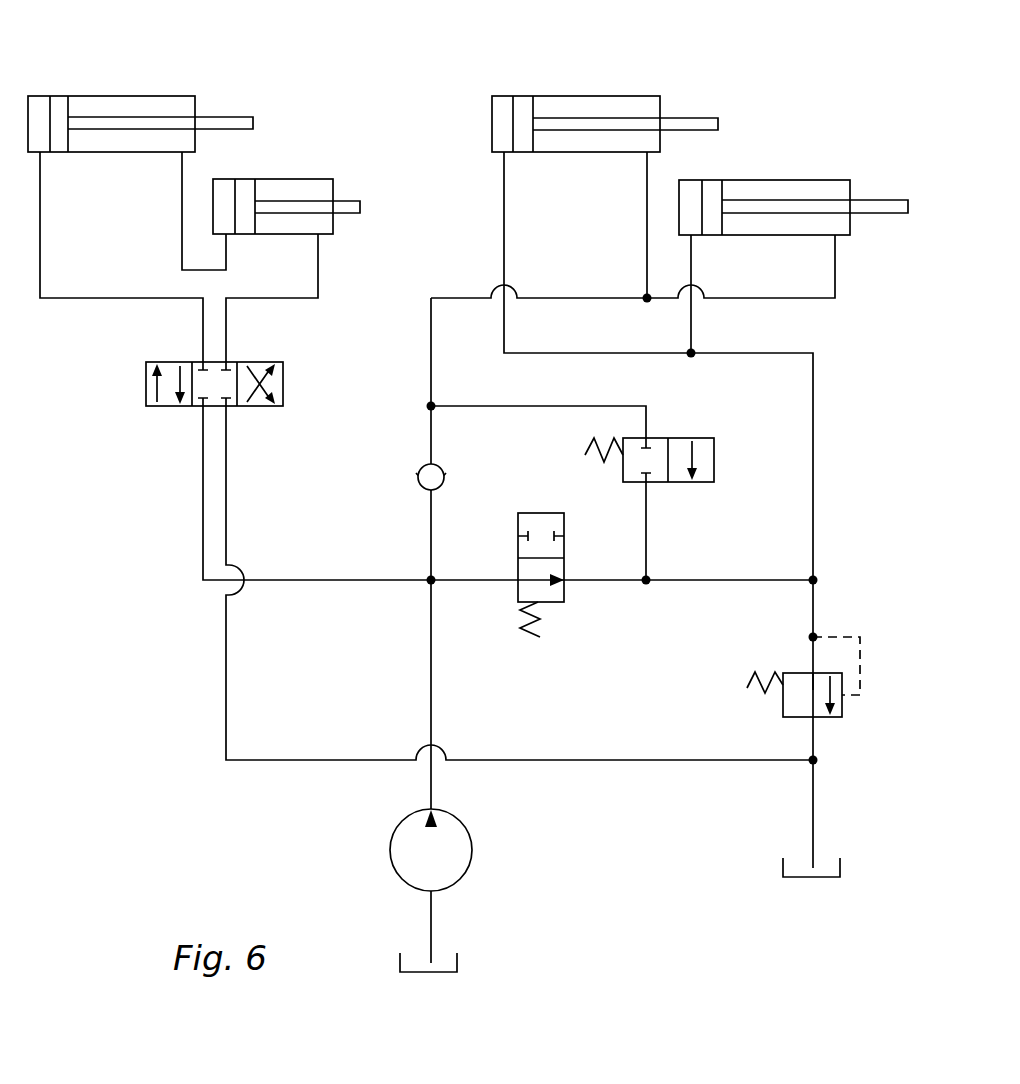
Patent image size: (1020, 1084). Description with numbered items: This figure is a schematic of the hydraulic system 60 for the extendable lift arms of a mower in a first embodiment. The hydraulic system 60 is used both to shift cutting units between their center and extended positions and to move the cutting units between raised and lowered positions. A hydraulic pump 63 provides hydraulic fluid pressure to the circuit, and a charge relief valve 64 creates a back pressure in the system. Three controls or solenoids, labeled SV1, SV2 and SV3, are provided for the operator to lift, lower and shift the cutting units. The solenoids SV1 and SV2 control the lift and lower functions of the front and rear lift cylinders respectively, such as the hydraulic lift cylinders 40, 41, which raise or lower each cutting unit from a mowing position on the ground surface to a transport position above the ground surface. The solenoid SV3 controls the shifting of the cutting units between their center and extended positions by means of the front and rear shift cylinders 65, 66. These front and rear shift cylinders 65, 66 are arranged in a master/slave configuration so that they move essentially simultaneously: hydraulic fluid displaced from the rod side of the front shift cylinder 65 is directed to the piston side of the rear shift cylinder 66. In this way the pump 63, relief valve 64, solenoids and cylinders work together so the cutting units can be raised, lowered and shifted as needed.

The hydraulic system 60 is at (222, 808).
The front shift cylinder 65 is at (142, 96).
The rear shift cylinder 66 is at (310, 179).
The hydraulic lift cylinder 40 is at (597, 96).
The hydraulic lift cylinder 41 is at (787, 180).
The solenoid SV3 is at (148, 420).
The solenoid SV1 is at (508, 497).
The solenoid SV2 is at (688, 503).
The charge relief valve 64 is at (797, 717).
The hydraulic pump 63 is at (470, 832).